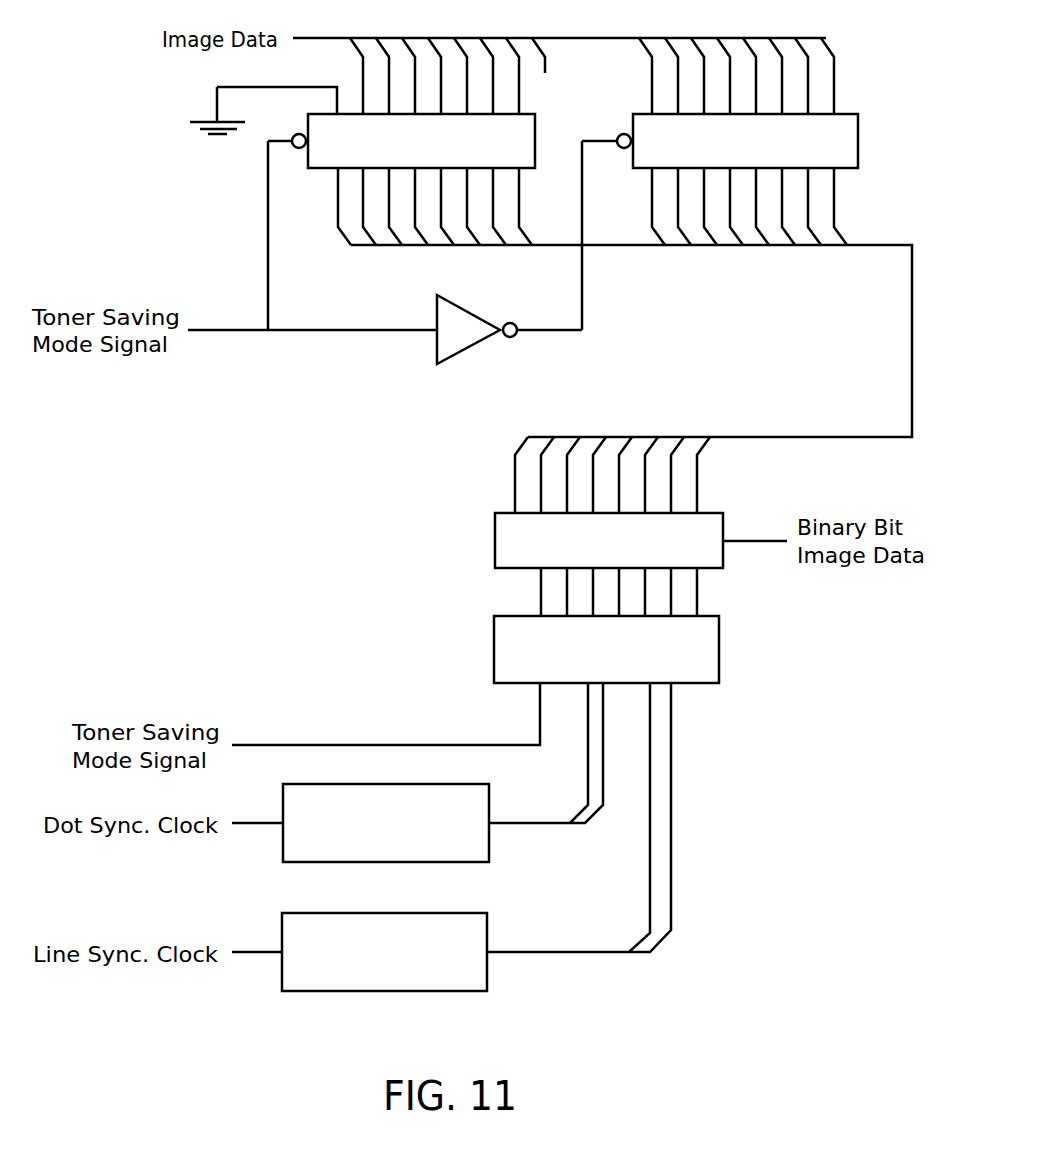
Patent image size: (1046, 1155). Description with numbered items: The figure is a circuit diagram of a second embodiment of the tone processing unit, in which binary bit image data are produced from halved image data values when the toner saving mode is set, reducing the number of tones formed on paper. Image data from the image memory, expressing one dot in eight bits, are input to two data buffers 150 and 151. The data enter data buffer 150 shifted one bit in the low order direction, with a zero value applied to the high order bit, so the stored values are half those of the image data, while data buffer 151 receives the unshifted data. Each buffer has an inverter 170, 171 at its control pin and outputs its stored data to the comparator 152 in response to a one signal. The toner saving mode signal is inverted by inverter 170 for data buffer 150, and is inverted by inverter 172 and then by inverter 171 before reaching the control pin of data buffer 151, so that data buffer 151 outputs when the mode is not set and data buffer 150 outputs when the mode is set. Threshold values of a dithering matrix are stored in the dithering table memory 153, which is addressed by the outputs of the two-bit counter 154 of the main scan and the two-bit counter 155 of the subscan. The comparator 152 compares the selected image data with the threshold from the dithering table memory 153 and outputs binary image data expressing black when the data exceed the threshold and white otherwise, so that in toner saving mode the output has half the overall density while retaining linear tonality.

The data buffer 150 is at (535, 141).
The data buffer 151 is at (858, 142).
The comparator 152 is at (495, 543).
The dithering table memory 153 is at (494, 648).
The 2-bit counter of the main scan 154 is at (382, 862).
The 2-bit counter of the subscan 155 is at (385, 991).
The inverter 170 is at (299, 148).
The inverter 171 is at (624, 148).
The inverter 172 is at (472, 346).